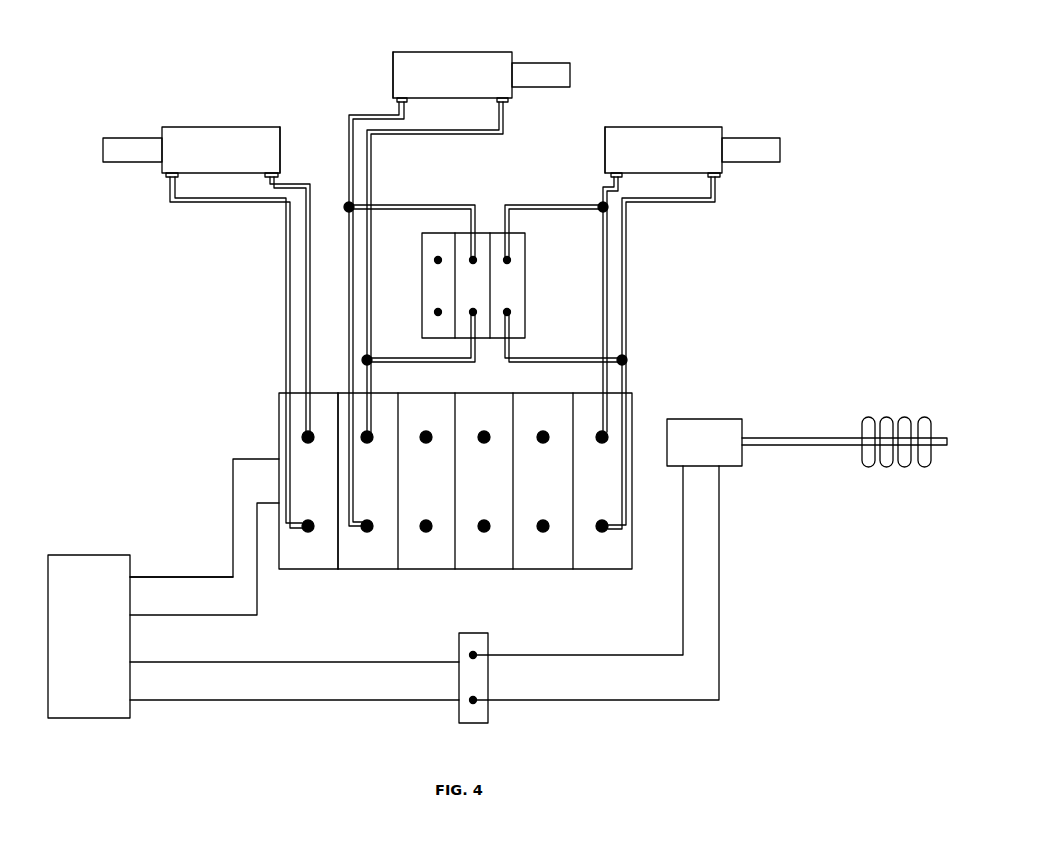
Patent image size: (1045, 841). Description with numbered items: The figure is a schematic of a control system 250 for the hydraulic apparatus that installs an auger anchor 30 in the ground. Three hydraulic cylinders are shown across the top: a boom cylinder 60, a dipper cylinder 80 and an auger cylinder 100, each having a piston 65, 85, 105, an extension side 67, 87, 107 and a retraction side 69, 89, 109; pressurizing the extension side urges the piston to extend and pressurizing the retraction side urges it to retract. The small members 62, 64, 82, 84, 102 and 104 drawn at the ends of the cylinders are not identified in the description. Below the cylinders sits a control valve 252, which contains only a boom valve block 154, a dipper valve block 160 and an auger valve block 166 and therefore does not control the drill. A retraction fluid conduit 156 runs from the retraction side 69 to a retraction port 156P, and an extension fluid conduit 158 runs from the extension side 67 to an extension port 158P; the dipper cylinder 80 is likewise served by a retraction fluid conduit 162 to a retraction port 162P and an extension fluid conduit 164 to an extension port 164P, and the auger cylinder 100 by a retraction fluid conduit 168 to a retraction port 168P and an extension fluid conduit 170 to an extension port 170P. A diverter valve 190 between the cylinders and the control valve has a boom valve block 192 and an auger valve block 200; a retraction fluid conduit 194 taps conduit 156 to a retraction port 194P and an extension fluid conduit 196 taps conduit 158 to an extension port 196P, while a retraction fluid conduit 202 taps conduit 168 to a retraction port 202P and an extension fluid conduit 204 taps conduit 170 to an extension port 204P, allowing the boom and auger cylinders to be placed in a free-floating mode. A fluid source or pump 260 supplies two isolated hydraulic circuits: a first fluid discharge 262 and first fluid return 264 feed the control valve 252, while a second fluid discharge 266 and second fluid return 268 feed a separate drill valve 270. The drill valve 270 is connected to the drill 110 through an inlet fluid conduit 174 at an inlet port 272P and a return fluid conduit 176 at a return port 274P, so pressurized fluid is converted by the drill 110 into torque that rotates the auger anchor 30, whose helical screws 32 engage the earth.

The control system 250 is at (95, 340).
The dipper cylinder 80 is at (203, 150).
The second heater fan 82 is at (103, 157).
The second heater outlet 84 is at (277, 142).
The piston 85 is at (135, 150).
The extension side 87 is at (278, 176).
The retraction side 89 is at (166, 175).
The retraction fluid conduit 162 is at (183, 203).
The extension fluid conduit 164 is at (262, 188).
The auger cylinder 100 is at (462, 76).
The third heater fan 102 is at (570, 71).
The third heater outlet 104 is at (393, 82).
The piston 105 is at (540, 78).
The extension side 107 is at (400, 98).
The retraction side 109 is at (500, 98).
The extension fluid conduit 170 is at (351, 115).
The retraction fluid conduit 168 is at (503, 104).
The boom cylinder 60 is at (673, 148).
The first heater fan 62 is at (780, 150).
The first heater outlet 64 is at (605, 148).
The piston 65 is at (748, 152).
The extension side 67 is at (612, 176).
The retraction side 69 is at (710, 173).
The retraction fluid conduit 156 is at (716, 188).
The extension fluid conduit 158 is at (620, 196).
The extension fluid conduit 204 is at (410, 207).
The extension port 204P is at (473, 255).
The extension fluid conduit 196 is at (515, 205).
The extension port 196P is at (507, 313).
The retraction fluid conduit 194 is at (530, 363).
The retraction port 194P is at (507, 260).
The retraction fluid conduit 202 is at (380, 364).
The retraction port 202P is at (474, 320).
The diverter valve 190 is at (437, 298).
The boom valve block 192 is at (508, 286).
The auger valve block 200 is at (470, 280).
The boom valve block 154 is at (590, 548).
The control valve 252 is at (535, 545).
The auger valve block 166 is at (345, 545).
The dipper valve block 160 is at (302, 479).
The retraction port 162P is at (303, 528).
The extension port 164P is at (303, 438).
The retraction port 168P is at (367, 535).
The extension port 170P is at (368, 445).
The retraction port 156P is at (603, 532).
The extension port 158P is at (607, 437).
The auger drill 110 is at (704, 442).
The auger anchor 30 is at (846, 440).
The helical screws 32 is at (895, 455).
The inlet fluid conduit 174 is at (684, 548).
The return fluid conduit 176 is at (684, 613).
The fluid source 260 is at (89, 636).
The first fluid discharge 262 is at (147, 577).
The first fluid return 264 is at (142, 613).
The second fluid discharge 266 is at (160, 662).
The second fluid return 268 is at (205, 700).
The drill valve 270 is at (473, 688).
The inlet port 272P is at (474, 660).
The return port 274P is at (470, 700).